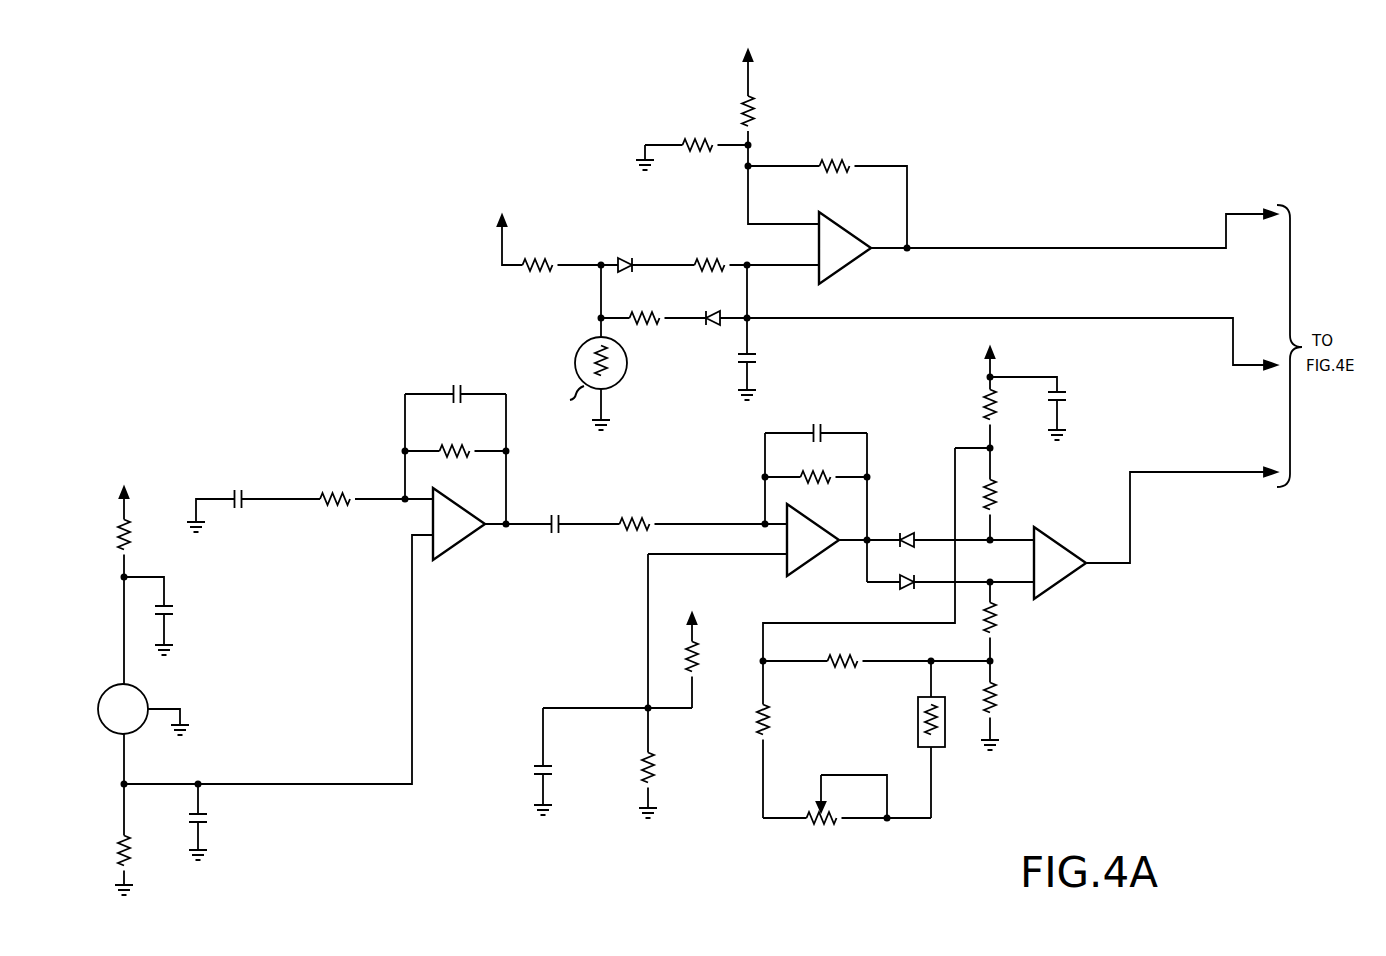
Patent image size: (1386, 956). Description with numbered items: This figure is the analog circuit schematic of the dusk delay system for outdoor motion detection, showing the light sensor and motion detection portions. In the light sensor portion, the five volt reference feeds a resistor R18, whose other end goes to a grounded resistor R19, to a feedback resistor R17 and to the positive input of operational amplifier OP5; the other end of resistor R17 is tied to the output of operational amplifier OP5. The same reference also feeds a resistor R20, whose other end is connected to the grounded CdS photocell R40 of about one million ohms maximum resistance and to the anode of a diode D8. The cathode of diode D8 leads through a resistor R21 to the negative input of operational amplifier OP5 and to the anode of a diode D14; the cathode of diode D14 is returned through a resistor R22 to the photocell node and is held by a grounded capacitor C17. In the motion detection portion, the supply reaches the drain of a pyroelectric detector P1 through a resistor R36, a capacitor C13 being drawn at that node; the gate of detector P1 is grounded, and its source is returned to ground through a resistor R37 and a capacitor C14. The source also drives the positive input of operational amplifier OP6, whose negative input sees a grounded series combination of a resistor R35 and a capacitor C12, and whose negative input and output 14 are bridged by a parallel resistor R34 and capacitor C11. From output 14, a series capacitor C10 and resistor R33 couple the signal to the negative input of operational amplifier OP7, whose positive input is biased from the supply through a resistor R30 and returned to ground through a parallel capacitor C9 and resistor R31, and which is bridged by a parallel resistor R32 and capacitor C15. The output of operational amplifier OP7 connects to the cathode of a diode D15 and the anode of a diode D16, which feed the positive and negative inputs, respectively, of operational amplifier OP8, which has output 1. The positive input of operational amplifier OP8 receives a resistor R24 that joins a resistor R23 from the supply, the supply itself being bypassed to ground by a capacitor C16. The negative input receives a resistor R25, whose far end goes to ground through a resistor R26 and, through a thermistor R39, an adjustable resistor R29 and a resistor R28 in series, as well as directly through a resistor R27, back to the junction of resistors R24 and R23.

The resistor R18 is at (780, 97).
The resistor R19 is at (692, 145).
The resistor R17 is at (827, 193).
The operational amplifier OP5 is at (848, 248).
The resistor R20 is at (550, 248).
The diode D8 is at (630, 253).
The resistor R21 is at (739, 254).
The resistor R22 is at (645, 318).
The diode D14 is at (718, 308).
The capacitor C17 is at (768, 332).
The CdS photocell 1 MEG dark R40 is at (592, 384).
The resistor R36 is at (149, 521).
The capacitor 100uf C13 is at (176, 616).
The pyroelectric detector P1 is at (143, 680).
The resistor R37 is at (140, 839).
The capacitor C14 is at (224, 822).
The capacitor C12 is at (253, 514).
The resistor R35 is at (376, 488).
The capacitor C11 is at (455, 409).
The resistor R34 is at (455, 475).
The operational amplifier OP6 is at (461, 524).
The output node 14 is at (518, 512).
The capacitor C10 is at (577, 540).
The resistor R33 is at (704, 513).
The resistor R30 is at (715, 650).
The resistor R31 is at (671, 783).
The capacitor C9 is at (571, 761).
The capacitor C15 is at (816, 441).
The resistor R32 is at (816, 518).
The operational amplifier OP7 is at (816, 540).
The diode D15 is at (915, 530).
The diode D16 is at (928, 595).
The resistor R23 is at (979, 388).
The capacitor C16 is at (1057, 408).
The resistor R24 is at (1010, 494).
The operational amplifier OP8 is at (1060, 559).
The output node 1 is at (1182, 516).
The resistor R25 is at (1007, 621).
The resistor R26 is at (1010, 705).
The resistor R27 is at (876, 662).
The resistor R28 is at (781, 759).
The thermistor R39 is at (903, 739).
The adjustable resistor R29 is at (847, 823).